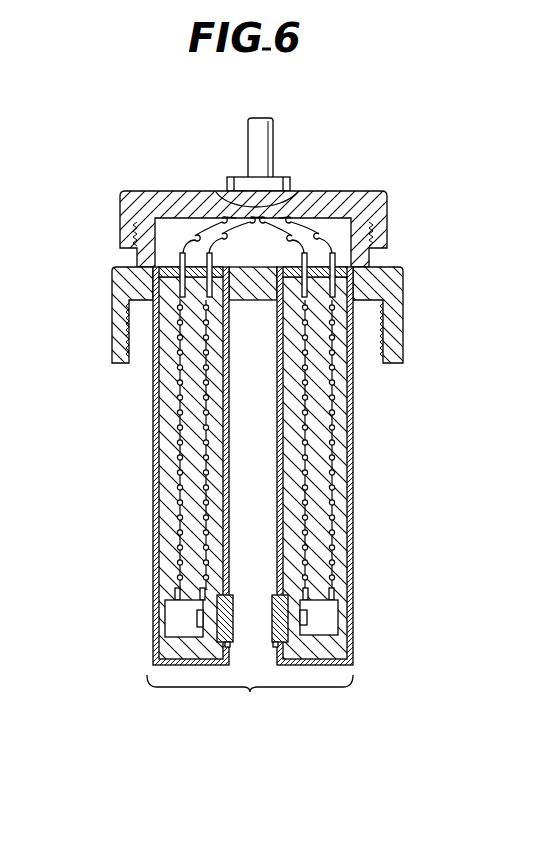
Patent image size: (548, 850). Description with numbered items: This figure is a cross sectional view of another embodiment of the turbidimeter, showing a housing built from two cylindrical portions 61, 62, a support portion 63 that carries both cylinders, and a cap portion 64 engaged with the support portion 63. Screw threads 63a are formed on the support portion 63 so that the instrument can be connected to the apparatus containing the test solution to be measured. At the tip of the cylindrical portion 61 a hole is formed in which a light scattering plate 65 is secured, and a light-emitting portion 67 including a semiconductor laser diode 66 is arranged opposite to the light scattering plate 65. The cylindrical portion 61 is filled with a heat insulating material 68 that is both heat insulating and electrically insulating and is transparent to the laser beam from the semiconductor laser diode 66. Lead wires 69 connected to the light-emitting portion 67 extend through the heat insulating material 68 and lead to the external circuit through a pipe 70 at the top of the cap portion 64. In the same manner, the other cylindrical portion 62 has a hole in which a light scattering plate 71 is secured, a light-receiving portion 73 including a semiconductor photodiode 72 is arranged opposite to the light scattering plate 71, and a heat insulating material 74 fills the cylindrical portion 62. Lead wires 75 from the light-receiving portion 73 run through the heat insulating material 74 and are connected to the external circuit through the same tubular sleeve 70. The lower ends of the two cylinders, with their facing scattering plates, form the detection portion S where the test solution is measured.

The pipe 70 is at (273, 137).
The cap portion 64 is at (137, 191).
The support portion 63 is at (110, 312).
The screw threads 63a is at (128, 347).
The cylindrical portion 61 is at (153, 507).
The cylindrical portion 62 is at (353, 462).
The heat insulating material 68 is at (192, 436).
The heat insulating material 74 is at (317, 435).
The lead wires 69 is at (200, 555).
The lead wires 75 is at (305, 547).
The light-emitting portion 67 is at (165, 617).
The semiconductor laser diode 66 is at (203, 600).
The light scattering plate 65 is at (232, 610).
The light scattering plate 71 is at (272, 625).
The semiconductor photodiode 72 is at (307, 618).
The light-receiving portion 73 is at (340, 622).
The detection portion S is at (250, 699).